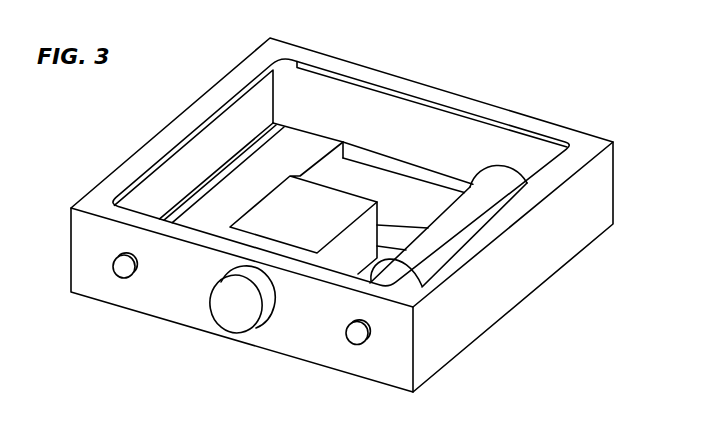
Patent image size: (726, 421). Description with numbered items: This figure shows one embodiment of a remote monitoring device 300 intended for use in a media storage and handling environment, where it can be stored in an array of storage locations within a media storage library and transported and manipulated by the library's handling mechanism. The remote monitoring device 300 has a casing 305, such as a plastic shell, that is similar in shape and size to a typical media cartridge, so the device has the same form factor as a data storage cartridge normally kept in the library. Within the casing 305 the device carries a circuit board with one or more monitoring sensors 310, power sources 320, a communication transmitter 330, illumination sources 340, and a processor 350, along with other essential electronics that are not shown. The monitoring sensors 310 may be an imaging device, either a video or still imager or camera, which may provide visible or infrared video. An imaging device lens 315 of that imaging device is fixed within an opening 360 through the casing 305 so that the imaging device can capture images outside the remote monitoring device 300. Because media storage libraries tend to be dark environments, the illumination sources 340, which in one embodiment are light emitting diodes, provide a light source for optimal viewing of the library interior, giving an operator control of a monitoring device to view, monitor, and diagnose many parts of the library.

The remote monitoring device 300 is at (562, 112).
The casing 305 is at (313, 49).
The monitoring sensors 310 is at (318, 218).
The imaging device lens 315 is at (228, 317).
The power sources 320 is at (442, 238).
The communication transmitter 330 is at (213, 212).
The illumination sources 340 is at (116, 276).
The processor 350 is at (403, 190).
The opening 360 is at (276, 319).